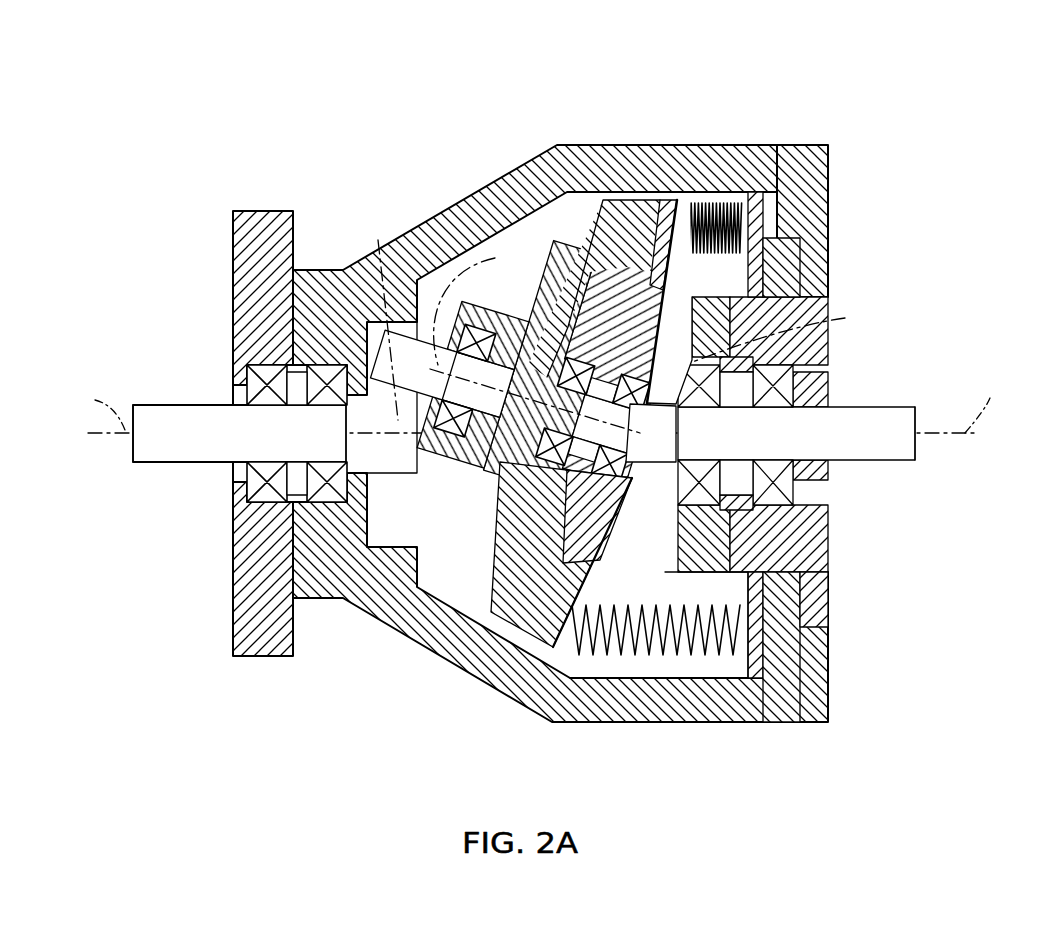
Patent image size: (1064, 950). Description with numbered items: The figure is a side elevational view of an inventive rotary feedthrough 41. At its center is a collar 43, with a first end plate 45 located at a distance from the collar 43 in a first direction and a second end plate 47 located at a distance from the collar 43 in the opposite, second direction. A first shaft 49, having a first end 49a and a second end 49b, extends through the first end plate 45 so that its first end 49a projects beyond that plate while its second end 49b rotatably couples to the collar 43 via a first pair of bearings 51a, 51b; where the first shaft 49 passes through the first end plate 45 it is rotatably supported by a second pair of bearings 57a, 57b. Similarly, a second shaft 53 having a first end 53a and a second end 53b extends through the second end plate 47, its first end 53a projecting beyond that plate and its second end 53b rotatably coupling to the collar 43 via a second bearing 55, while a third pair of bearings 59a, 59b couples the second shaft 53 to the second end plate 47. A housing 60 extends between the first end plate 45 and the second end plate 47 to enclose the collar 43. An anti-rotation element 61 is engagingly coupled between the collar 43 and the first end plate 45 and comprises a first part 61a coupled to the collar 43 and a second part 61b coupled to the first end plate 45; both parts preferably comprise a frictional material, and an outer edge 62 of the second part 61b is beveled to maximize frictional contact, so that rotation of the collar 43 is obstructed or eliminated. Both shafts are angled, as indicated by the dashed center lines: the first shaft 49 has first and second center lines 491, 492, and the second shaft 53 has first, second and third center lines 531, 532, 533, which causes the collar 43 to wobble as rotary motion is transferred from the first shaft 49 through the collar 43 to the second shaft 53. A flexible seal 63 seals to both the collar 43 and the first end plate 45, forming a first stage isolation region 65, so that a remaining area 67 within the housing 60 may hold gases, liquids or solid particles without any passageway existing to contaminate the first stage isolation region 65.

The rotary feedthrough 41 is at (862, 84).
The collar 43 is at (625, 215).
The first end plate 45 is at (812, 192).
The second end plate 47 is at (248, 241).
The first shaft 49 is at (820, 400).
The first end of the first shaft 49a is at (925, 440).
The second end of the first shaft 49b is at (505, 512).
The first center line of the first shaft 491 is at (1005, 402).
The second center line of the first shaft 492 is at (748, 348).
The first pair of bearings 51a is at (573, 607).
The first pair of bearings 51b is at (560, 500).
The second shaft 53 is at (175, 405).
The first end of the second shaft 53a is at (130, 462).
The second end of the second shaft 53b is at (505, 385).
The first center line of the second shaft 531 is at (82, 402).
The second center line of the second shaft 532 is at (535, 333).
The third center line of the second shaft 533 is at (372, 240).
The second bearing 55 is at (438, 465).
The second pair of bearings 57a is at (705, 500).
The second pair of bearings 57b is at (707, 505).
The third pair of bearings 59a is at (257, 490).
The third pair of bearings 59b is at (330, 495).
The housing 60 is at (700, 160).
The anti-rotation element 61 is at (728, 270).
The first part of the anti-rotation element 61a is at (655, 597).
The second part of the anti-rotation element 61b is at (740, 600).
The outer edge 62 is at (670, 553).
The flexible seal 63 is at (725, 215).
The first stage isolation region 65 is at (468, 610).
The remaining area 67 is at (740, 597).